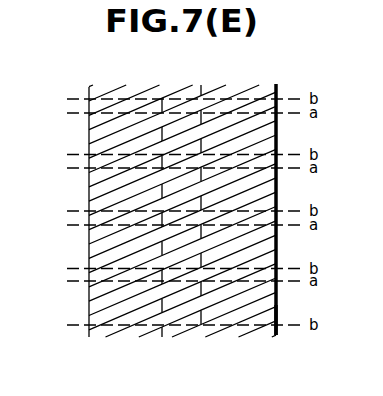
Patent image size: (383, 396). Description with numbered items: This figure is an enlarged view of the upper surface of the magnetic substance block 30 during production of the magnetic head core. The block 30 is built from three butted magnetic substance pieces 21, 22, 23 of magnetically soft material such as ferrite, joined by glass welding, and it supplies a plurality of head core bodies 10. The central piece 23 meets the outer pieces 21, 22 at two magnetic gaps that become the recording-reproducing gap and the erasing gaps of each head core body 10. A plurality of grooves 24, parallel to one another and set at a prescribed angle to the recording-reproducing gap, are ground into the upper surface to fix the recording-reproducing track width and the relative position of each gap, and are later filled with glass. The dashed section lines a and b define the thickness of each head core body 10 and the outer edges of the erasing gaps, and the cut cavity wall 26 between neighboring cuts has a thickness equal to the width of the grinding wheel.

The head core body 10 is at (202, 192).
The magnetic substance piece 21 is at (130, 85).
The magnetic substance piece 22 is at (242, 85).
The magnetic substance piece 23 is at (183, 85).
The parallel grooves 24 is at (88, 144).
The cut cavity wall 26 is at (278, 158).
The magnetic substance block 30 is at (279, 333).